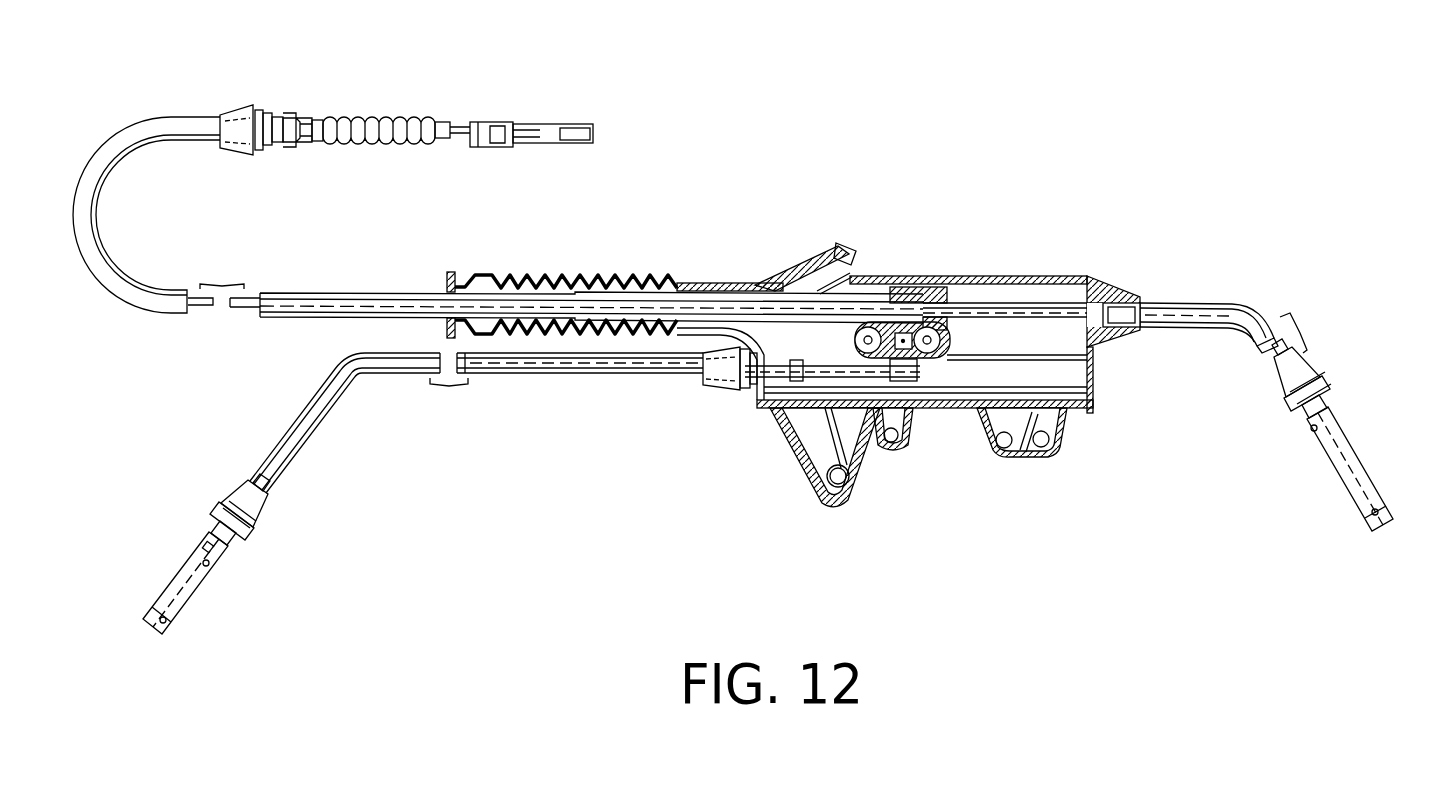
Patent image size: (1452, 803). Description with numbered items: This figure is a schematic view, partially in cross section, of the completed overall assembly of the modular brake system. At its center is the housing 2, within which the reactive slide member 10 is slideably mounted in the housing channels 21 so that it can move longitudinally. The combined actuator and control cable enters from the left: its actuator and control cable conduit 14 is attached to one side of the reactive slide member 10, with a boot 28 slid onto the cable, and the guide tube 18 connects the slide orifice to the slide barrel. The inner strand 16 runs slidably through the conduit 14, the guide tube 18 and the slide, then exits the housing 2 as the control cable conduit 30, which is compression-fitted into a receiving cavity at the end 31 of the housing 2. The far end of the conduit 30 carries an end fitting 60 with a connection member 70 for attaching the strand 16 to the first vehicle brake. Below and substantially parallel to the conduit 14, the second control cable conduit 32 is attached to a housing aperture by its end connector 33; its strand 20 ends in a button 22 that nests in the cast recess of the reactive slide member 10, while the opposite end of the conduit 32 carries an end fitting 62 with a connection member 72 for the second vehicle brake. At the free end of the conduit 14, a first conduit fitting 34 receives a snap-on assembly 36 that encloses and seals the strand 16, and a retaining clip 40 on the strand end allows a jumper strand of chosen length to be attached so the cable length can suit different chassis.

The housing 2 is at (1000, 280).
The reactive slide member 10 is at (967, 288).
The actuator and control cable conduit 14 is at (103, 212).
The inner strand 16 is at (463, 127).
The guide tube 18 is at (747, 308).
The second control strand 20 is at (827, 373).
The housing channels 21 is at (1090, 353).
The button 22 is at (920, 377).
The boot 28 is at (714, 283).
The control cable conduit 30 is at (1213, 303).
The end of the housing 31 is at (1120, 282).
The second control cable conduit 32 is at (620, 376).
The end connector 33 is at (717, 388).
The first conduit fitting 34 is at (237, 108).
The snap-on assembly 36 is at (357, 120).
The retaining clip 40 is at (520, 128).
The end fitting 60 is at (1330, 387).
The end fitting 62 is at (227, 493).
The connection member 70 is at (1367, 467).
The connection member 72 is at (182, 563).